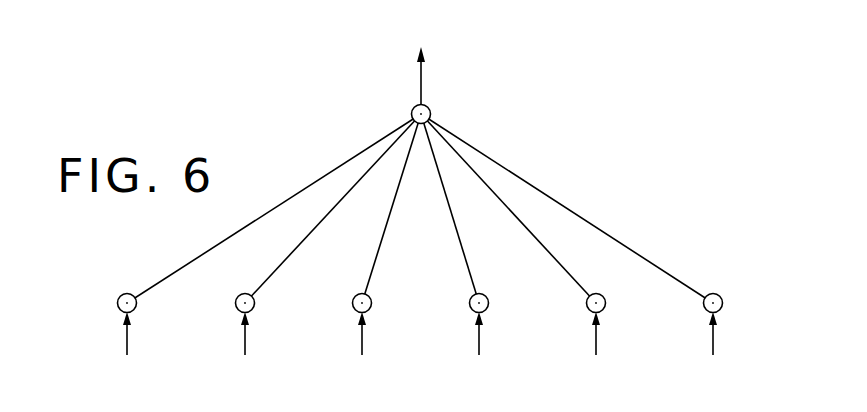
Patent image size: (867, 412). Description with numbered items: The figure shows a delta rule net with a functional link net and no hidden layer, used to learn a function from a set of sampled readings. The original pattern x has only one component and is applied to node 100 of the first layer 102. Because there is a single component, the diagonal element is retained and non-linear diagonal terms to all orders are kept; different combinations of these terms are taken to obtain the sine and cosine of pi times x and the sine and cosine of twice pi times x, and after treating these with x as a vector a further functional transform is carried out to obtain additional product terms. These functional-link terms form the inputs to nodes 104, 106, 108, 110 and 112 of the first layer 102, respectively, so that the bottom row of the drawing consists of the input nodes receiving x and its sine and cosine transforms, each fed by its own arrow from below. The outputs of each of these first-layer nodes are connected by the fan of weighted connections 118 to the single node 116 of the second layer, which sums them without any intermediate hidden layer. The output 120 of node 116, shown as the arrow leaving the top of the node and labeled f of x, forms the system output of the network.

The node 100 is at (119, 296).
The first layer 102 is at (728, 327).
The node 104 is at (238, 295).
The node 106 is at (355, 296).
The node 108 is at (470, 297).
The node 110 is at (588, 300).
The node 112 is at (702, 307).
The node 116 is at (411, 113).
The second layer 118 is at (520, 150).
The output 120 is at (421, 90).